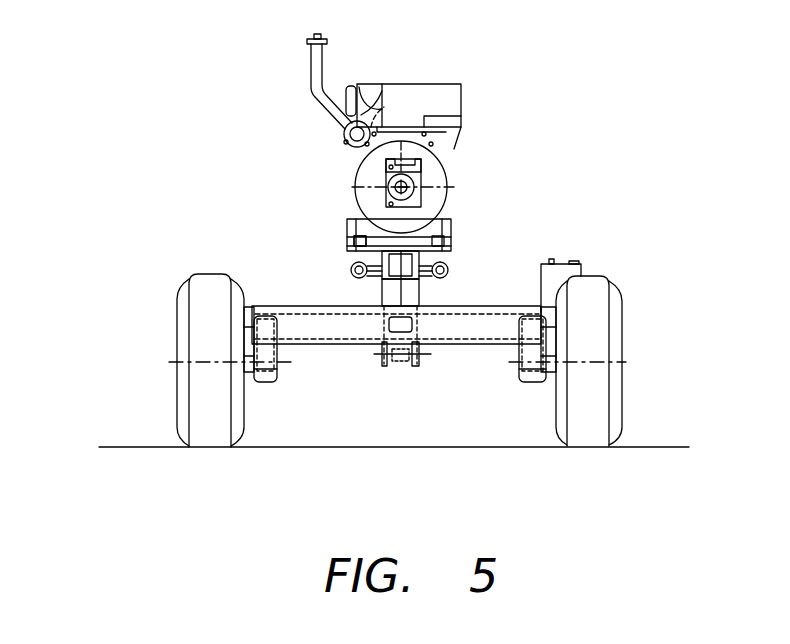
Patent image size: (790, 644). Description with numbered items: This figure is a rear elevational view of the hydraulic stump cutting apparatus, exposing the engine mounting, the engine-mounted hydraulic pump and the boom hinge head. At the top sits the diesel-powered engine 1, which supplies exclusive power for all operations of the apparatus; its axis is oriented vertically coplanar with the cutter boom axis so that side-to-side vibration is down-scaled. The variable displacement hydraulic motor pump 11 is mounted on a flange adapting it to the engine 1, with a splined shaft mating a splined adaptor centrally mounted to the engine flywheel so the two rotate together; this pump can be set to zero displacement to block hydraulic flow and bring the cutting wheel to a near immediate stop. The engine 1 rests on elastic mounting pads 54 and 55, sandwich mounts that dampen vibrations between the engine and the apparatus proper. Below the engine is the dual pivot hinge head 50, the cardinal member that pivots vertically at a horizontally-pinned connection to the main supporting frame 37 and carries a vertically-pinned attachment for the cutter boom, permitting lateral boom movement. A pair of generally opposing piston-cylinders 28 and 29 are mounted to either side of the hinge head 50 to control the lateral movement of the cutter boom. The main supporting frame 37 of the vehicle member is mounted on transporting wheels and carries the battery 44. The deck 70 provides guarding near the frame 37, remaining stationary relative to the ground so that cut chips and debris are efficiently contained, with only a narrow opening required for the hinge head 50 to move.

The diesel-powered engine 1 is at (468, 90).
The variable displacement hydraulic motor pump 11 is at (428, 199).
The piston-cylinder 28 is at (456, 256).
The piston-cylinder 29 is at (340, 271).
The main supporting frame 37 is at (342, 348).
The battery 44 is at (590, 266).
The dual pivot hinge head 50 is at (427, 294).
The elastic mounting pad 54 is at (339, 239).
The elastic mounting pad 55 is at (340, 251).
The deck 70 is at (251, 303).